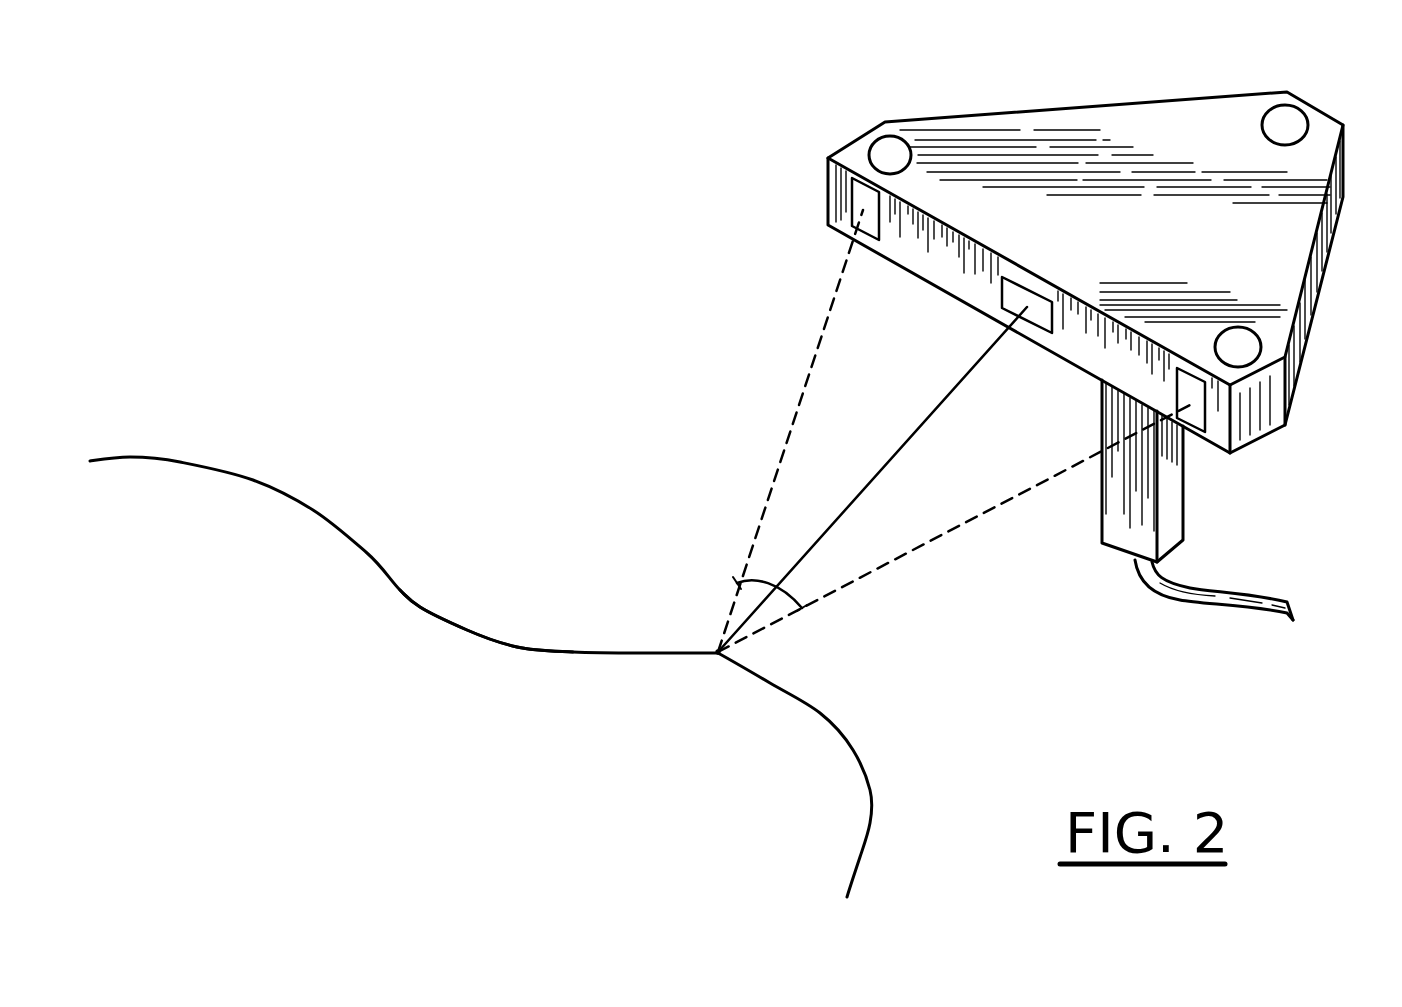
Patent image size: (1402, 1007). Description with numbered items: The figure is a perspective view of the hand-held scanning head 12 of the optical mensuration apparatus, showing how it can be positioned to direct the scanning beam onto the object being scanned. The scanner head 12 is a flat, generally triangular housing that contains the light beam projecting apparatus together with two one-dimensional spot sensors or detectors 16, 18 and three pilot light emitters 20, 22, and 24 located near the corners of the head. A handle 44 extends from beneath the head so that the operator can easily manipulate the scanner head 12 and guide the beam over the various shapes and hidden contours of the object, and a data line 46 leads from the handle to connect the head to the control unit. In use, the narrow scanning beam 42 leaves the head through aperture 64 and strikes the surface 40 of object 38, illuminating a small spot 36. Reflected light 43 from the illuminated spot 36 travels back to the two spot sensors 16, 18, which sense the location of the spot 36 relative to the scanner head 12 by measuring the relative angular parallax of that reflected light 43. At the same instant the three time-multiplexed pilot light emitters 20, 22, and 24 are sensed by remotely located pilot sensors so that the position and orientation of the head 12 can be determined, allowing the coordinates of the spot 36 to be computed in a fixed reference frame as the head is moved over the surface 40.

The scanning head 12 is at (1129, 100).
The one-dimensional spot sensor 16 is at (1176, 383).
The one-dimensional spot sensor 18 is at (851, 199).
The pilot light emitter 20 is at (1256, 330).
The pilot light emitter 22 is at (869, 143).
The pilot light emitter 24 is at (1301, 108).
The illuminated spot 36 is at (717, 648).
The object 38 is at (180, 458).
The surface 40 is at (403, 592).
The scanning beam 42 is at (971, 372).
The reflected light 43 is at (737, 583).
The handle 44 is at (1186, 512).
The data line 46 is at (1202, 590).
The aperture 64 is at (1001, 296).